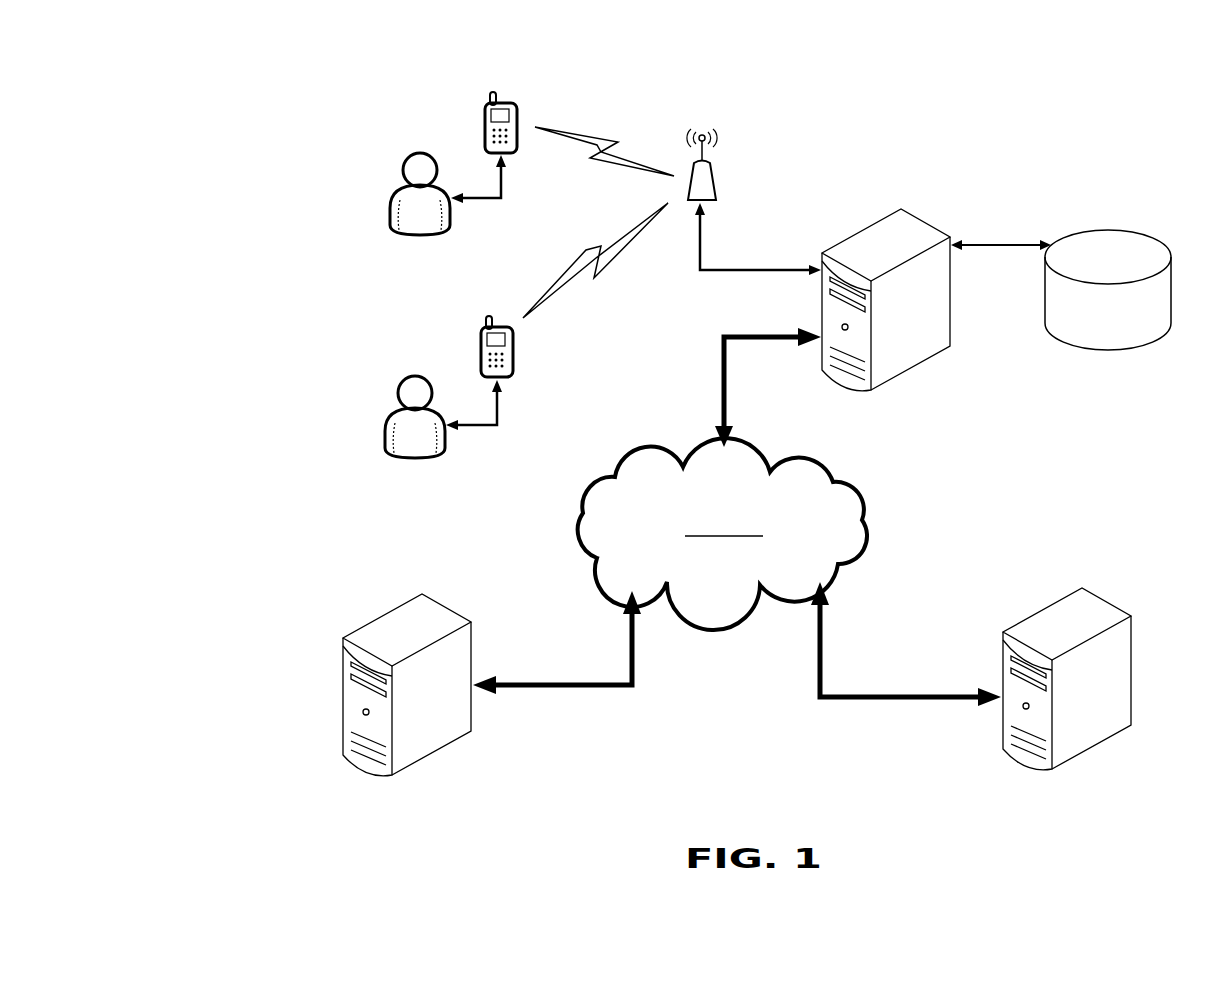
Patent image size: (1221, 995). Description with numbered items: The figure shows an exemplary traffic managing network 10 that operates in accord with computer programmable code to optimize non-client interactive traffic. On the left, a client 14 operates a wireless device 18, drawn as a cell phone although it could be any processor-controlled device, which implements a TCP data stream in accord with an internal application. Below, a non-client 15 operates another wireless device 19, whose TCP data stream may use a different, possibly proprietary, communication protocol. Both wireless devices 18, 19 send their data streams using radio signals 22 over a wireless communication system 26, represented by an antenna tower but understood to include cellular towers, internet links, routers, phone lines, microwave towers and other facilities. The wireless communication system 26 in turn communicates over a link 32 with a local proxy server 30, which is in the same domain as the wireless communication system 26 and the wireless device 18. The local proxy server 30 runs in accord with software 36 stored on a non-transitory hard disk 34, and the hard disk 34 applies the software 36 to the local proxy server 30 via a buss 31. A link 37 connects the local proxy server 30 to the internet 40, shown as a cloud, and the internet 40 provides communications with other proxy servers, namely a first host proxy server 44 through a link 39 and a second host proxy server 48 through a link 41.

The traffic managing network 10 is at (240, 91).
The client 14 is at (400, 177).
The non-client 15 is at (397, 400).
The wireless device 18 is at (485, 116).
The wireless device 19 is at (480, 340).
The radio signals 22 is at (598, 137).
The wireless communication system 26 is at (712, 167).
The local proxy server 30 is at (900, 212).
The buss 31 is at (998, 245).
The link 32 is at (788, 270).
The hard disk 34 is at (1092, 228).
The software 36 is at (1124, 224).
The link 37 is at (722, 335).
The link 39 is at (525, 685).
The internet 40 is at (627, 460).
The link 41 is at (935, 697).
The Host 1 Proxy Server 44 is at (422, 592).
The Host 2 Proxy Server 48 is at (1115, 607).